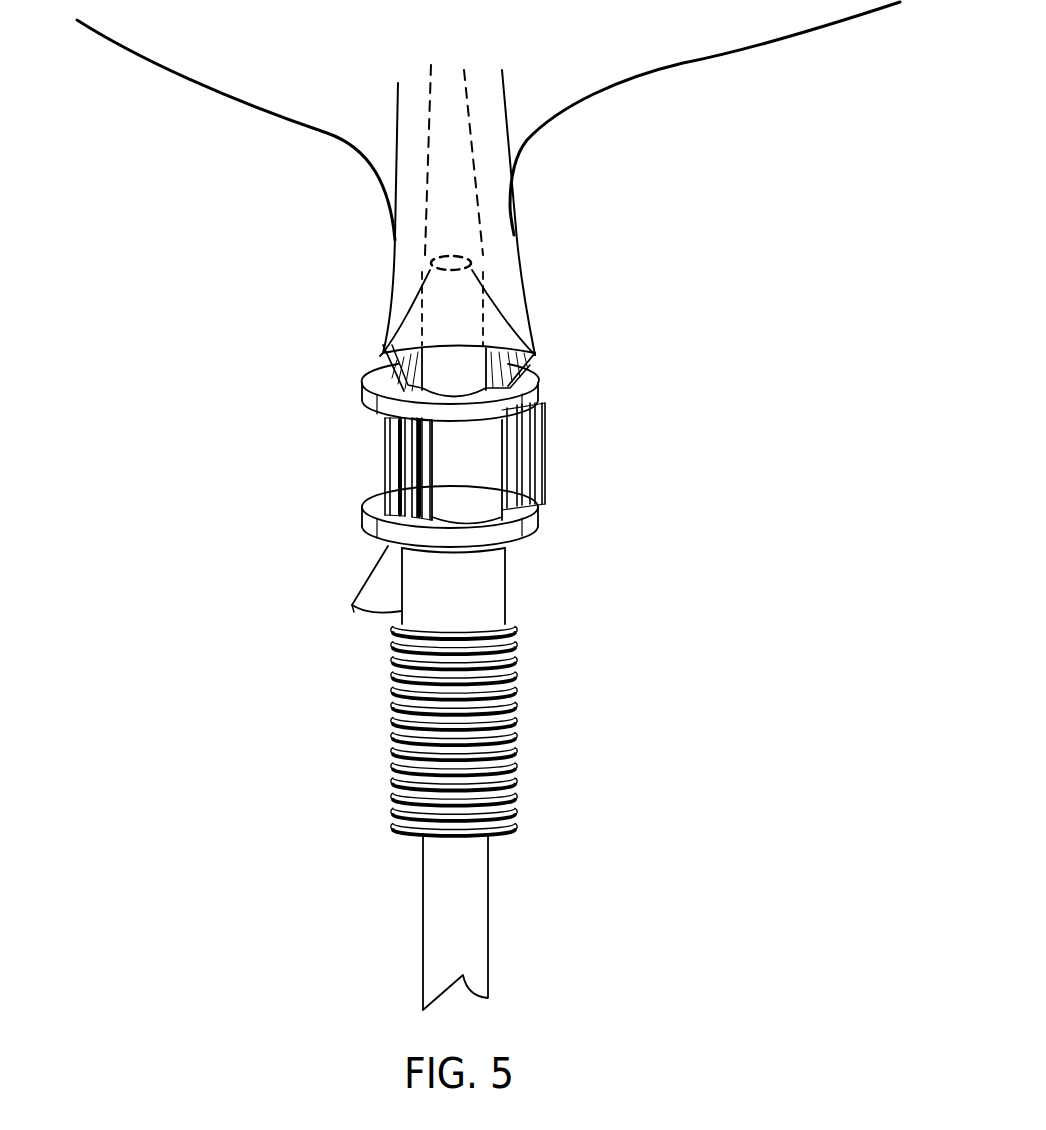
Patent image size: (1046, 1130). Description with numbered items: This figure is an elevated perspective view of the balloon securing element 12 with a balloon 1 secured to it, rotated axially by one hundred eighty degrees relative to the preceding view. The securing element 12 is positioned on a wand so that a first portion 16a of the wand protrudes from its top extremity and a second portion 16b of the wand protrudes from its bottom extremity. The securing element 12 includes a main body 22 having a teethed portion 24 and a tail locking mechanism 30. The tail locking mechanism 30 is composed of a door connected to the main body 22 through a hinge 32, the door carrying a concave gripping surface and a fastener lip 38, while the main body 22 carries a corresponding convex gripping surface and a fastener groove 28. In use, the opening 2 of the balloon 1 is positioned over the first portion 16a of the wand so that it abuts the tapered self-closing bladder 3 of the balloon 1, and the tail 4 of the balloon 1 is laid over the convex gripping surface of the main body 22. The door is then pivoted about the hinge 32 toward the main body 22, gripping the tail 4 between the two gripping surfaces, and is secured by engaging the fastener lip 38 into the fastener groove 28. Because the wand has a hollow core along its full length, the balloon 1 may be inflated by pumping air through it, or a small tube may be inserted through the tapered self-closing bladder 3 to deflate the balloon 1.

The balloon 1 is at (730, 53).
The opening 2 is at (383, 352).
The tapered self-closing bladder 3 is at (457, 213).
The tail 4 is at (380, 588).
The balloon securing element 12 is at (618, 567).
The first portion of the wand 16a is at (472, 318).
The second portion of the wand 16b is at (480, 932).
The main body 22 is at (483, 594).
The teethed portion 24 is at (508, 789).
The fastener groove 28 is at (422, 462).
The tail locking mechanism 30 is at (572, 443).
The hinge 32 is at (543, 471).
The fastener lip 38 is at (385, 483).